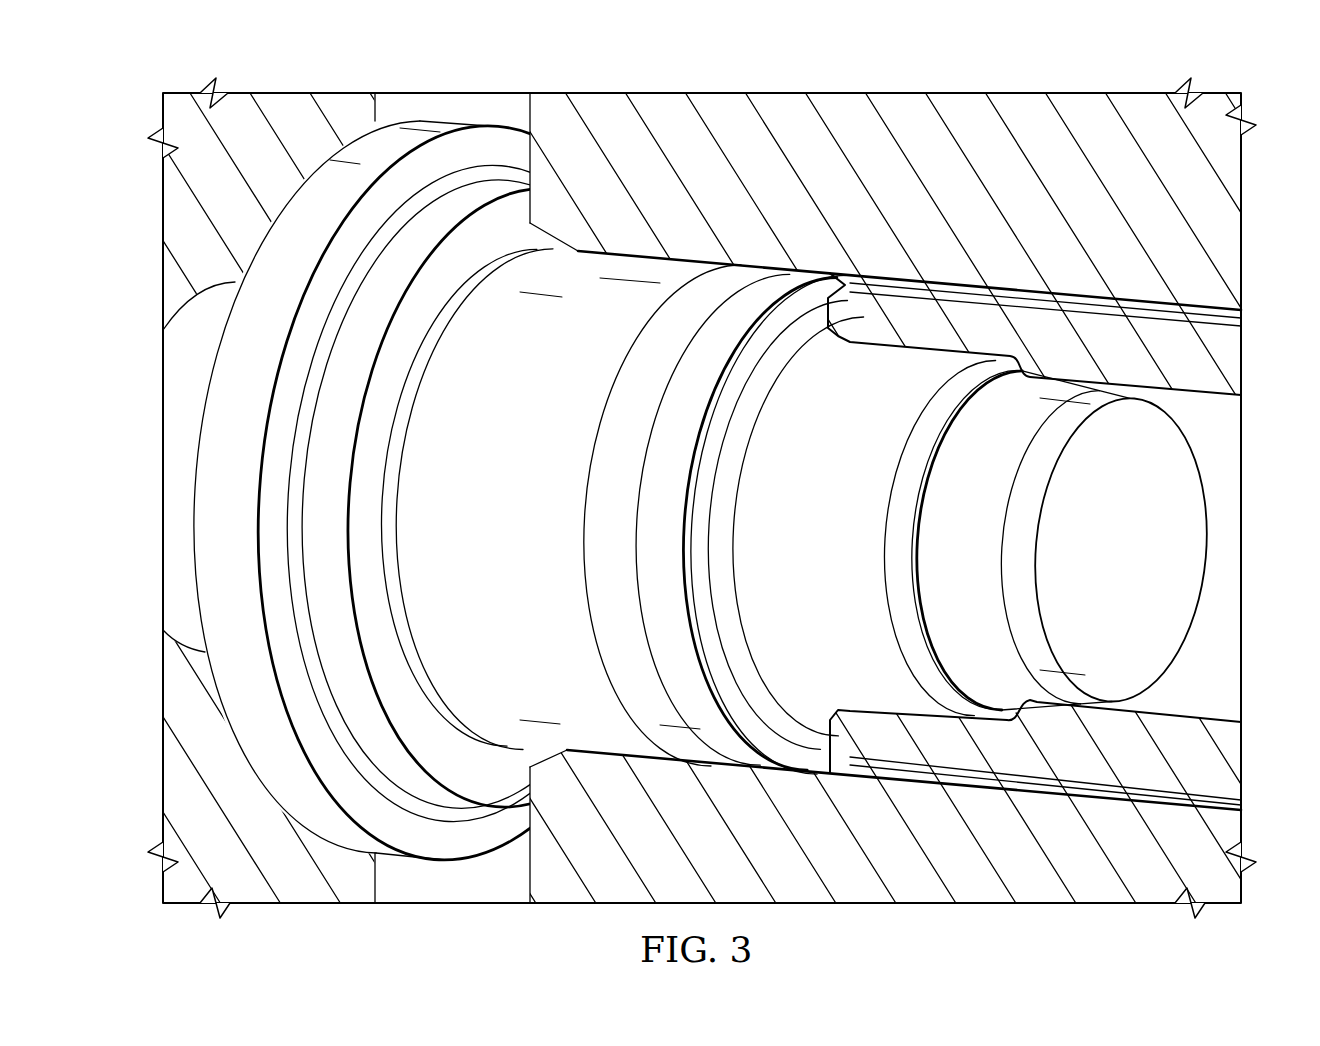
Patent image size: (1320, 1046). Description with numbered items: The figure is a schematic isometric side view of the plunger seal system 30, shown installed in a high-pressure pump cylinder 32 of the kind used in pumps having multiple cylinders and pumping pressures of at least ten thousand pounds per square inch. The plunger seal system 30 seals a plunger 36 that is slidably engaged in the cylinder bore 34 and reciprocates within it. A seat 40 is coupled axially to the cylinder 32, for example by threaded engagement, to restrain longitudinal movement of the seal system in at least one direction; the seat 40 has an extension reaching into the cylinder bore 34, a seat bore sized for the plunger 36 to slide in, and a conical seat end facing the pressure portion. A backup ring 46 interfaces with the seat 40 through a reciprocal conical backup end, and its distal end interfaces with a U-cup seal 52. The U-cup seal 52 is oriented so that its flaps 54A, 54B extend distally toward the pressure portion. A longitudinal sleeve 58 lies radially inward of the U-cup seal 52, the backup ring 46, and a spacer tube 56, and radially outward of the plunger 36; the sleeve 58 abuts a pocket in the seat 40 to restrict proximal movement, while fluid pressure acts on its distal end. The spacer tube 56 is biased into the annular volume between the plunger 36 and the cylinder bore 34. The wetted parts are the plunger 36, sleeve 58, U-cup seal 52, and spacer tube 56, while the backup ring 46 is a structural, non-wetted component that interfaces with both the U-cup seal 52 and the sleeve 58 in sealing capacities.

The plunger seal system 30 is at (885, 76).
The high-pressure pump cylinder 32 is at (1228, 248).
The cylinder bore 34 is at (1228, 793).
The plunger 36 is at (1158, 650).
The seat 40 is at (222, 400).
The backup ring 46 is at (633, 378).
The U-cup seal 52 is at (757, 355).
The flap of U-cup seal 54A is at (717, 390).
The flap of U-cup seal 54B is at (730, 453).
The spacer tube 56 is at (1228, 738).
The longitudinal sleeve 58 is at (878, 455).